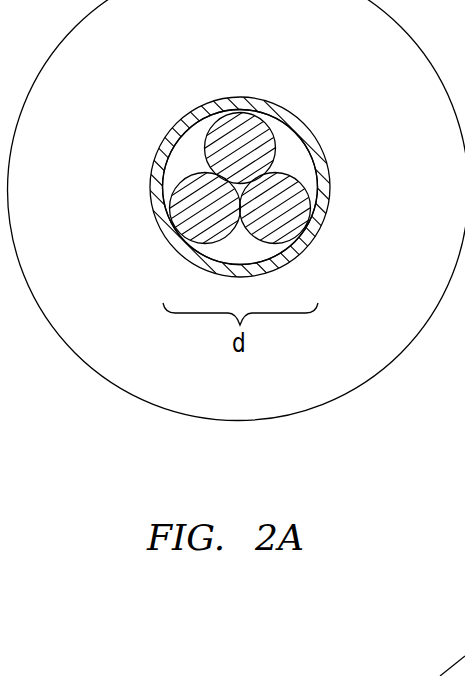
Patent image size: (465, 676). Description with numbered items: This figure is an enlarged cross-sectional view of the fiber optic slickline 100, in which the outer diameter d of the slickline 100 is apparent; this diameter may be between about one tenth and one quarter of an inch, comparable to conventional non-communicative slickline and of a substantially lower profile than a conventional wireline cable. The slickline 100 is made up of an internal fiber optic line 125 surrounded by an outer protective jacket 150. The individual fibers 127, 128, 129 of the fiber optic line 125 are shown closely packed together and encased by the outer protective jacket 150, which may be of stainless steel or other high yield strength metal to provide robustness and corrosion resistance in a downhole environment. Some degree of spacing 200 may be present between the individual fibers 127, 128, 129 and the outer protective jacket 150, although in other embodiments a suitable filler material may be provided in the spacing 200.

The fiber optic slickline 100 is at (213, 187).
The outer protective jacket 150 is at (240, 187).
The spacing 200 is at (230, 176).
The fiber optic line 125 is at (243, 159).
The fiber 127 is at (240, 129).
The fiber 128 is at (296, 208).
The fiber 129 is at (186, 208).